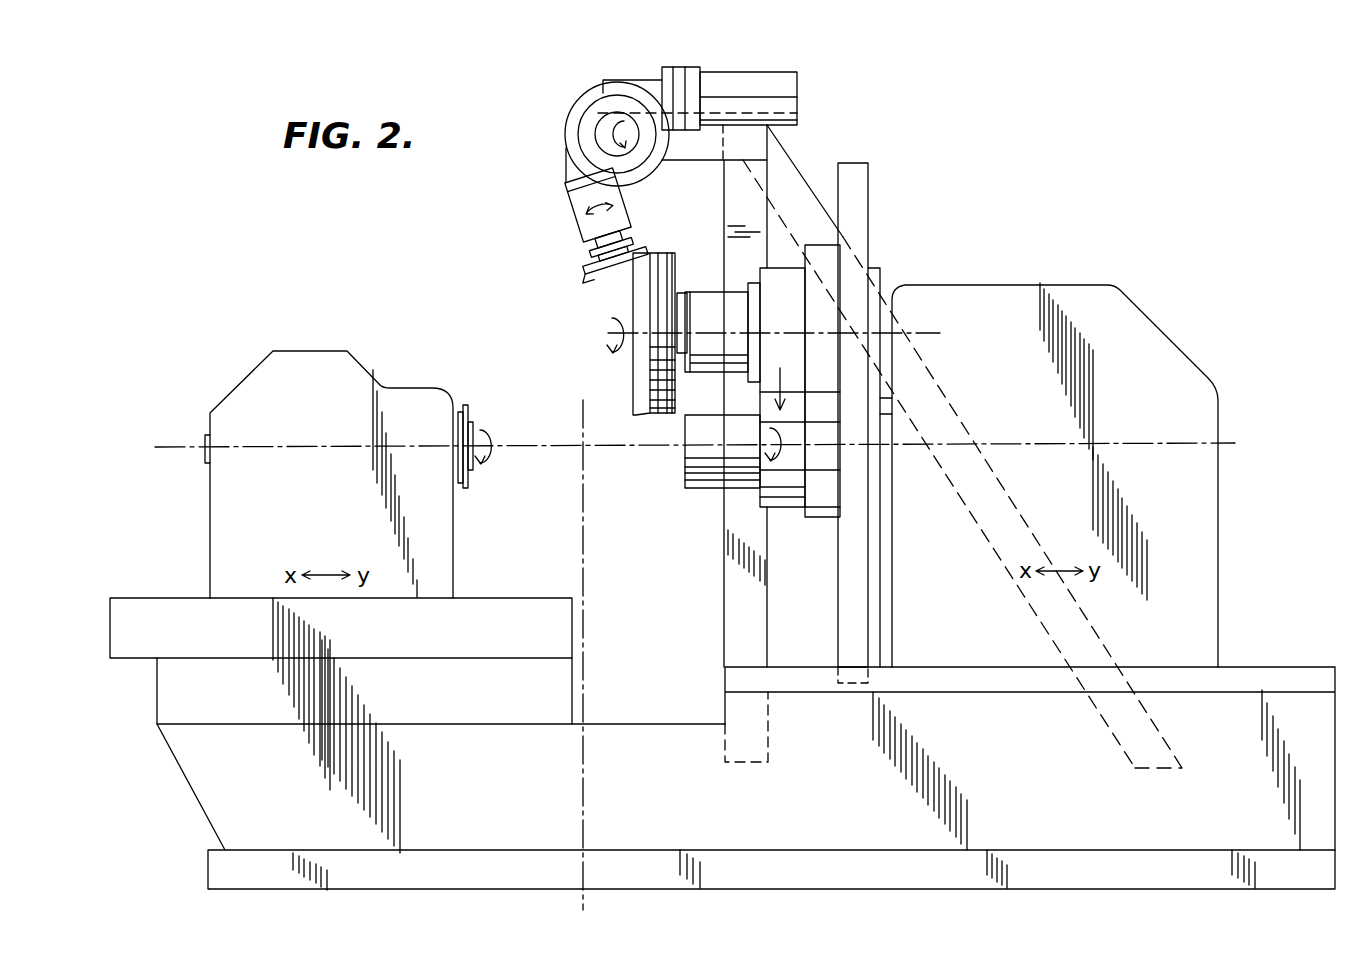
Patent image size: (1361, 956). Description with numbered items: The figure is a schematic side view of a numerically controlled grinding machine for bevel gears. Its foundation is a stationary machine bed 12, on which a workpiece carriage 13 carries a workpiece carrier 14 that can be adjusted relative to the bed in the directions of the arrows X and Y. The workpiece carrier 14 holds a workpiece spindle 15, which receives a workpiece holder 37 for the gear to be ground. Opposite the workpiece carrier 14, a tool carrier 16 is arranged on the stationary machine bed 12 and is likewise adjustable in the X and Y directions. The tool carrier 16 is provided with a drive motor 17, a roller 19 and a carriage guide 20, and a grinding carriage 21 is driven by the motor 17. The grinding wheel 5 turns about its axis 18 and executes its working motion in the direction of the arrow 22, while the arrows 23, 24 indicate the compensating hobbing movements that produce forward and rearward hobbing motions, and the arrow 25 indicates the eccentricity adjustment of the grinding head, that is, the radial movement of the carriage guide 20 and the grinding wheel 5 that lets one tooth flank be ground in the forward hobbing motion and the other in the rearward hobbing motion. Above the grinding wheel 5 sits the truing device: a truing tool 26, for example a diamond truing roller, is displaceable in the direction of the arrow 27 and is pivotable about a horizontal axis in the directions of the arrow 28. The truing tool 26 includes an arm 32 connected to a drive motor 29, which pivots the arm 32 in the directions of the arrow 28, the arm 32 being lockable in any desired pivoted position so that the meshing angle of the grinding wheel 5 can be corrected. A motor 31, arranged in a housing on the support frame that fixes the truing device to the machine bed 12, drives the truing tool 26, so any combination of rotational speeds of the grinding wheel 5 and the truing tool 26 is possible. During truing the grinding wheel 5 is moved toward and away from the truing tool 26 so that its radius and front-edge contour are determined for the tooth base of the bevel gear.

The grinding wheel 5 is at (651, 416).
The stationary machine bed 12 is at (456, 801).
The workpiece carriage 13 is at (132, 656).
The workpiece carrier 14 is at (222, 560).
The workpiece spindle 15 is at (304, 447).
The tool carrier 16 is at (1131, 325).
The drive motor 17 is at (703, 490).
The axis of the grinding wheel 18 is at (722, 372).
The roller 19 is at (888, 393).
The carriage guide 20 is at (863, 298).
The grinding carriage 21 is at (830, 270).
The arrow of working motion 22 is at (611, 357).
The hobbing movement arrow 23 is at (495, 436).
The hobbing movement arrow 24 is at (768, 441).
The eccentricity adjustment arrow 25 is at (784, 376).
The truing tool 26 is at (600, 271).
The displacement direction arrow 27 is at (578, 213).
The pivoting direction arrow 28 is at (613, 132).
The drive motor 29 is at (798, 96).
The motor 31 is at (590, 238).
The arm 32 is at (579, 176).
The workpiece holder 37 is at (468, 410).